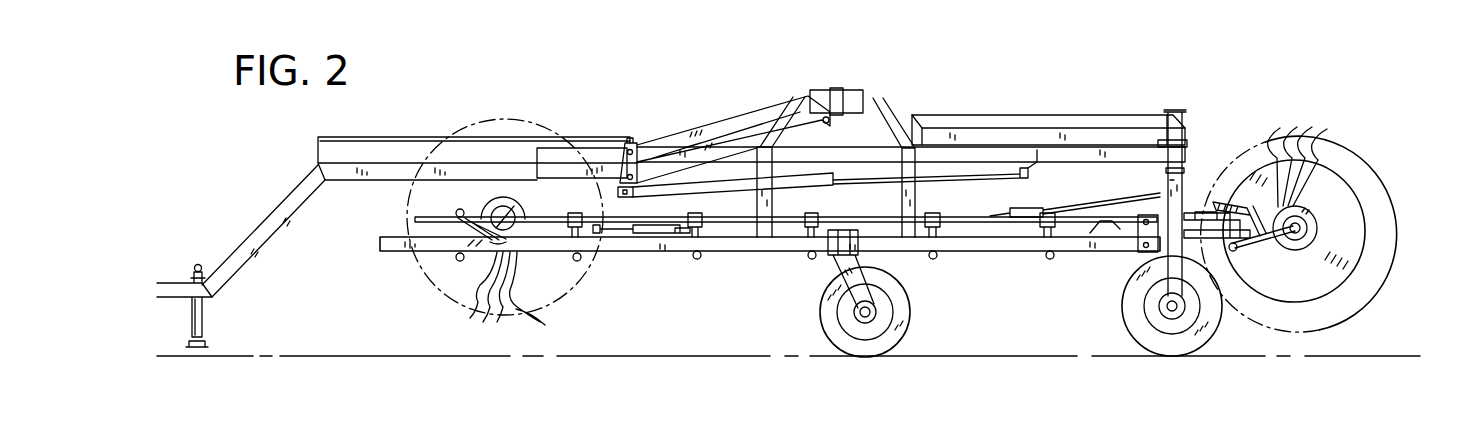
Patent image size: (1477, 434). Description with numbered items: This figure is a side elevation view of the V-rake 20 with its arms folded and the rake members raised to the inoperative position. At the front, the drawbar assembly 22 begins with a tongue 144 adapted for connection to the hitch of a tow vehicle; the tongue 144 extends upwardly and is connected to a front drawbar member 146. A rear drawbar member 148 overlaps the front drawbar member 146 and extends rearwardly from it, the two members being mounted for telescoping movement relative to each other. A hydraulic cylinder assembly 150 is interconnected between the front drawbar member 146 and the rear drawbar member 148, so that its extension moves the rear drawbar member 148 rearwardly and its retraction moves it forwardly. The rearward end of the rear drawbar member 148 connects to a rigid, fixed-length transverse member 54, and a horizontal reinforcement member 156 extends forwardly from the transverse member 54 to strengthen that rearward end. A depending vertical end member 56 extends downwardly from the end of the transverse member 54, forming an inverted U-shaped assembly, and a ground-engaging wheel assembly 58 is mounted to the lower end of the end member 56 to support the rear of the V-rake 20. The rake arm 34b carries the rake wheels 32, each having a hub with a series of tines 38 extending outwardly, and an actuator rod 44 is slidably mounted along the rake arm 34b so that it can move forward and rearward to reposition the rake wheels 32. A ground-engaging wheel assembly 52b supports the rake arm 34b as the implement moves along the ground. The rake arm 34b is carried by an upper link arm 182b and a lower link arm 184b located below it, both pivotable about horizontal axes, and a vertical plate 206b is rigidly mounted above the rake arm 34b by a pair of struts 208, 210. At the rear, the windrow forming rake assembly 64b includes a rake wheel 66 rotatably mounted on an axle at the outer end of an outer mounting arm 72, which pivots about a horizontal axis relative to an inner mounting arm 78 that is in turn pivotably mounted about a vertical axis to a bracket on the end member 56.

The V-rake 20 is at (1100, 63).
The drawbar assembly 22 is at (362, 197).
The rake wheel 32 is at (503, 115).
The rake arm 34b is at (737, 253).
The tines 38 is at (530, 306).
The actuator rod 44 is at (950, 217).
The ground-engaging wheel assembly 52b is at (918, 307).
The transverse member 54 is at (1187, 133).
The end member 56 is at (1187, 162).
The ground-engaging wheel assembly 58 is at (1116, 333).
The windrow forming rake assembly 64b is at (1352, 122).
The rake wheel 66 is at (1387, 183).
The outer mounting arm 72 is at (1343, 288).
The inner mounting arm 78 is at (1225, 295).
The tongue 144 is at (177, 282).
The front drawbar member 146 is at (375, 163).
The rear drawbar member 148 is at (907, 125).
The hydraulic cylinder assembly 150 is at (812, 196).
The horizontal reinforcement member 156 is at (1067, 113).
The link arm 182b is at (718, 120).
The link arm 184b is at (680, 137).
The vertical plate 206b is at (847, 90).
The strut 208 is at (767, 122).
The strut 210 is at (910, 110).